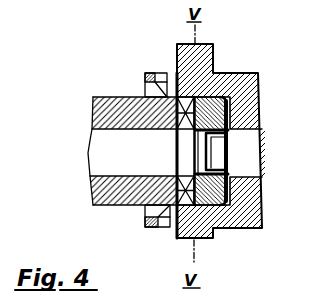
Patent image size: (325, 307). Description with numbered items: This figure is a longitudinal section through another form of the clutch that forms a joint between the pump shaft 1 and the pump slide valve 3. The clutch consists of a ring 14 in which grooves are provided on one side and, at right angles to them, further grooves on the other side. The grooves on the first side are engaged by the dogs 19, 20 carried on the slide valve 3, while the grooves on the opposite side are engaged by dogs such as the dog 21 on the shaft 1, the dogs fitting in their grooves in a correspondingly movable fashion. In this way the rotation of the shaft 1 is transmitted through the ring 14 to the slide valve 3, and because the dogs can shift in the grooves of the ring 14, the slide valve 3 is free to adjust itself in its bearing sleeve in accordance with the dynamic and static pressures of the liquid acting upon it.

The pump shaft 1 is at (260, 80).
The pump slide valve 3 is at (132, 111).
The ring 14 is at (210, 113).
The dog 19 is at (147, 75).
The dog 20 is at (148, 219).
The dog 21 is at (221, 157).